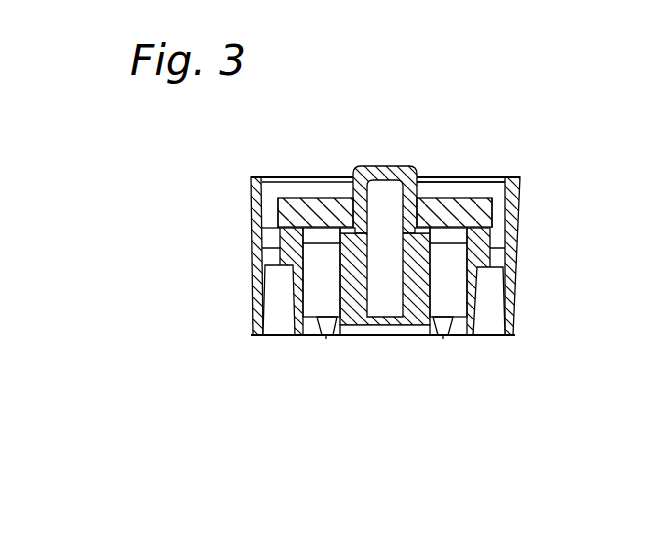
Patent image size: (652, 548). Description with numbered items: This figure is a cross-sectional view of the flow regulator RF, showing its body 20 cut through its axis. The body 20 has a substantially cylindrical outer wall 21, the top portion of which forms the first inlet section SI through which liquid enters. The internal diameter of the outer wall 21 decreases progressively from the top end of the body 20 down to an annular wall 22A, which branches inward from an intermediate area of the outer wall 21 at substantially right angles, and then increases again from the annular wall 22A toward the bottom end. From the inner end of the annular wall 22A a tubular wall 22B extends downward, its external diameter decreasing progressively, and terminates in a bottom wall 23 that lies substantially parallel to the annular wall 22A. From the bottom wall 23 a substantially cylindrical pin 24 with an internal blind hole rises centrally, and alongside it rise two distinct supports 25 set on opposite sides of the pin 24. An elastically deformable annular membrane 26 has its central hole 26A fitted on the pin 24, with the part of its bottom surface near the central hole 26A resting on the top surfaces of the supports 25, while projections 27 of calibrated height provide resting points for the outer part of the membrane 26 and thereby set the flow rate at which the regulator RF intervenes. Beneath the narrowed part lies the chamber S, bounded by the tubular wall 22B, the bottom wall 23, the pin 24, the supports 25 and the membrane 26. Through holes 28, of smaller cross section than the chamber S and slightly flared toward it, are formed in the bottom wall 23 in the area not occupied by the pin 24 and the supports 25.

The body 20 is at (527, 196).
The outer wall 21 is at (250, 207).
The annular wall 22A is at (268, 240).
The tubular wall 22B is at (300, 292).
The bottom wall 23 is at (461, 333).
The pin 24 is at (385, 175).
The supports 25 is at (466, 302).
The membrane 26 is at (318, 203).
The central hole 26A is at (422, 190).
The projections 27 is at (262, 233).
The through holes 28 is at (322, 337).
The chamber S is at (447, 260).
The first inlet section SI is at (270, 187).
The flow regulator RF is at (550, 154).